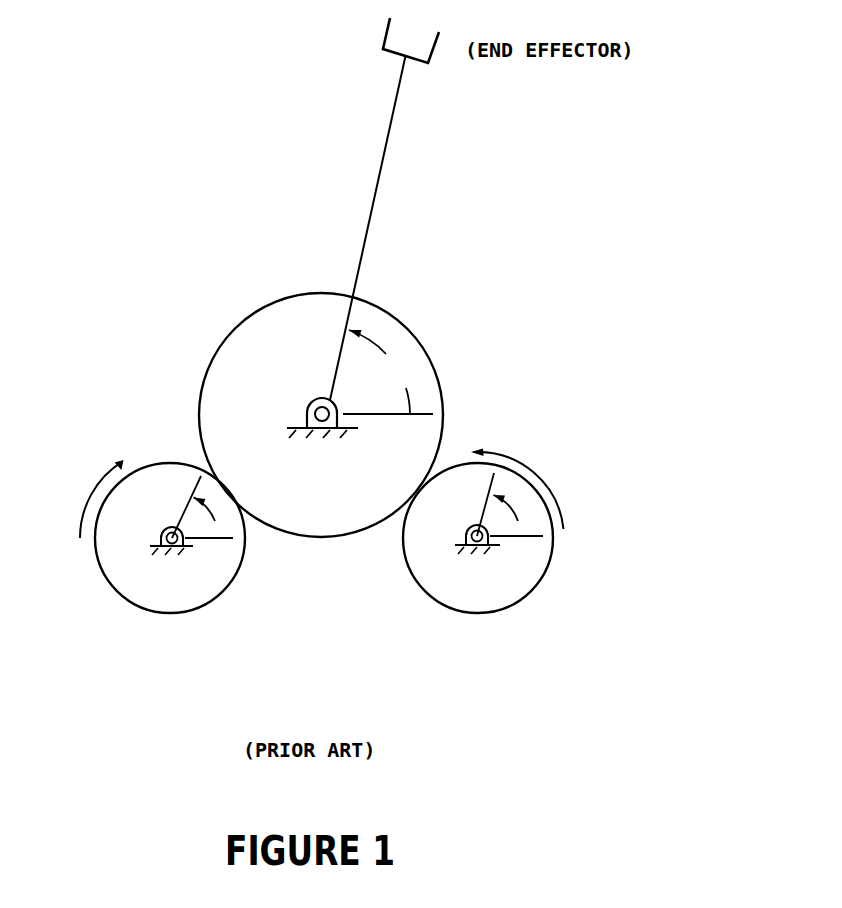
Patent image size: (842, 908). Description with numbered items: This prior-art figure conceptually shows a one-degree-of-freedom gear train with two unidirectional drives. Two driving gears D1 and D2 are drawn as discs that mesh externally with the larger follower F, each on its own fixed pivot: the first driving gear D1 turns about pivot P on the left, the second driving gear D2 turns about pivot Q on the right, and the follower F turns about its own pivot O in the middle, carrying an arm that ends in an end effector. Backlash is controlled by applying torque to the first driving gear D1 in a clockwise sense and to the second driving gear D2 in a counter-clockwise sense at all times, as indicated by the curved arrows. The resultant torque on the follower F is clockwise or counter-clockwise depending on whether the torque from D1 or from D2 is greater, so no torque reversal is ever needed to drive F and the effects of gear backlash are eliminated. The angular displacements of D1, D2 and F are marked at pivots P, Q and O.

The follower F is at (383, 209).
The fixed pivot of main disc O is at (360, 433).
The driving gear D1 is at (162, 547).
The fixed pivot of first drive disc P is at (191, 526).
The driving gear D2 is at (483, 542).
The fixed pivot of second drive disc Q is at (499, 526).